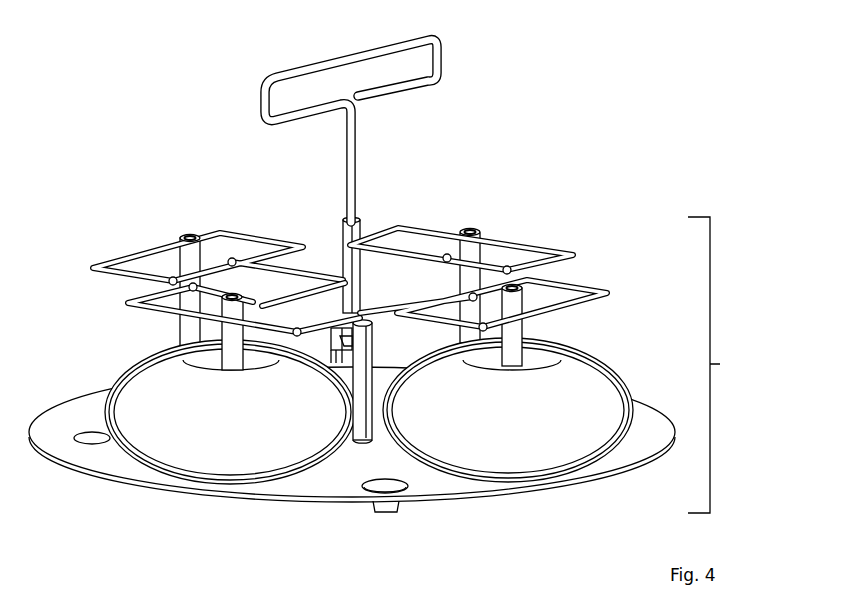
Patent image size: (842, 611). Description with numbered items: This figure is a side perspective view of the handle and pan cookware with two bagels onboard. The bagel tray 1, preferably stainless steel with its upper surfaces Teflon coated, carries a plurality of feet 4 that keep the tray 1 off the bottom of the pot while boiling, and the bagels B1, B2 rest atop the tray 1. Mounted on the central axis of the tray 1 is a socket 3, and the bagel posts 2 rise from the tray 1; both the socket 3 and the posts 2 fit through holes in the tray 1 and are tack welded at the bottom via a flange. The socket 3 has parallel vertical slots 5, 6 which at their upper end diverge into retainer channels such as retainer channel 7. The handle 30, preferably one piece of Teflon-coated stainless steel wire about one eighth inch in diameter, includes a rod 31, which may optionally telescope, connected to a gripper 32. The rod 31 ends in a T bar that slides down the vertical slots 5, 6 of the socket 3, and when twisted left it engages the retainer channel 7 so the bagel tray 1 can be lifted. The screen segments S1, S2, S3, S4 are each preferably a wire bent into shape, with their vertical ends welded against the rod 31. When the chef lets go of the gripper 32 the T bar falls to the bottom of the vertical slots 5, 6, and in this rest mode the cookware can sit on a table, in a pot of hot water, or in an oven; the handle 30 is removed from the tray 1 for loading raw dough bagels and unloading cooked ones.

The bagel tray 1 is at (657, 434).
The bagel posts 2 is at (390, 344).
The socket 3 is at (363, 425).
The feet 4 is at (372, 510).
The vertical slot 5 is at (342, 339).
The vertical slot 6 is at (367, 327).
The retainer channel 7 is at (352, 342).
The handle 30 is at (437, 165).
The rod 31 is at (347, 159).
The gripper 32 is at (380, 127).
The screen segment S1 is at (597, 303).
The screen segment S2 is at (530, 242).
The screen segment S3 is at (148, 241).
The screen segment S4 is at (133, 312).
The bagel B1 is at (608, 386).
The bagel B2 is at (188, 458).